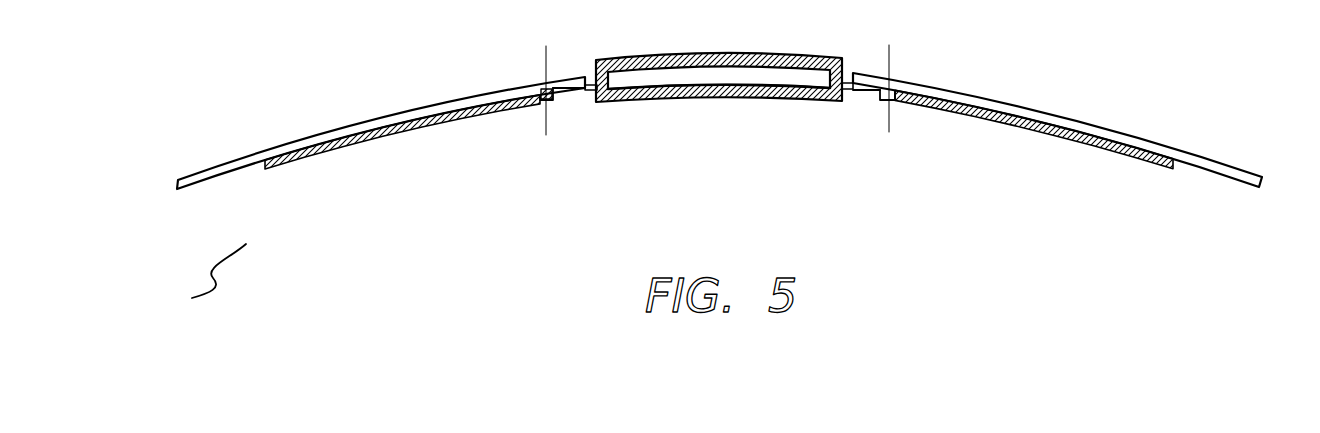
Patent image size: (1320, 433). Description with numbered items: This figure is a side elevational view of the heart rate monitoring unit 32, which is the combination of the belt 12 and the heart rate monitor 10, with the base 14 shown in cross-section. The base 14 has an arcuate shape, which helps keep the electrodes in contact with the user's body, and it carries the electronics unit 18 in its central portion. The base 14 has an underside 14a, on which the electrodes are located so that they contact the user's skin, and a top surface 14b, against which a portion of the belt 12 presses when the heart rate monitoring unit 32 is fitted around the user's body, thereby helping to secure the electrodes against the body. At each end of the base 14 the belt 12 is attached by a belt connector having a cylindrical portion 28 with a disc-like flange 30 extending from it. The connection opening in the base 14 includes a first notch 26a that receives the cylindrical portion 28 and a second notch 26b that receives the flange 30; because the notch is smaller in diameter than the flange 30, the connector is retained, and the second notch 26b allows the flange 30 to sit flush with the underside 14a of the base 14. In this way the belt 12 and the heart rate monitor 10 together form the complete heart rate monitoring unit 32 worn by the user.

The heart rate monitor 10 is at (729, 166).
The belt 12 is at (225, 165).
The base 14 is at (695, 102).
The underside 14a is at (480, 114).
The top surface 14b is at (984, 97).
The electronics unit 18 is at (787, 102).
The first notch 26a is at (524, 100).
The second notch 26b is at (530, 101).
The cylindrical portion 28 is at (559, 97).
The flange 30 is at (550, 101).
The heart rate monitoring unit 32 is at (200, 277).